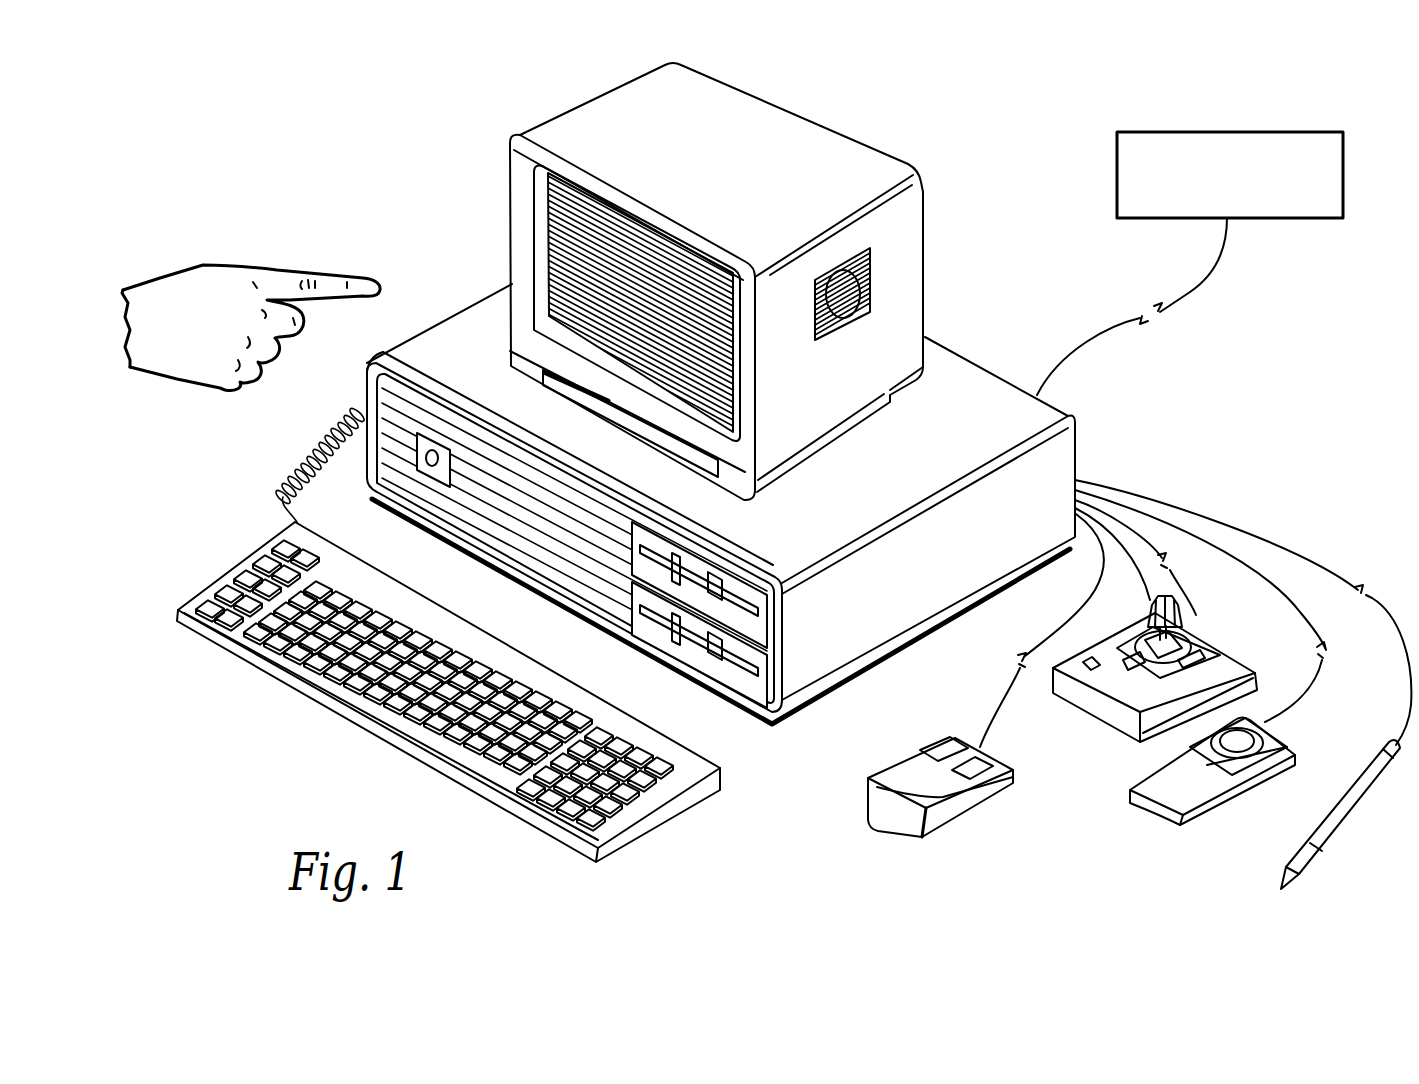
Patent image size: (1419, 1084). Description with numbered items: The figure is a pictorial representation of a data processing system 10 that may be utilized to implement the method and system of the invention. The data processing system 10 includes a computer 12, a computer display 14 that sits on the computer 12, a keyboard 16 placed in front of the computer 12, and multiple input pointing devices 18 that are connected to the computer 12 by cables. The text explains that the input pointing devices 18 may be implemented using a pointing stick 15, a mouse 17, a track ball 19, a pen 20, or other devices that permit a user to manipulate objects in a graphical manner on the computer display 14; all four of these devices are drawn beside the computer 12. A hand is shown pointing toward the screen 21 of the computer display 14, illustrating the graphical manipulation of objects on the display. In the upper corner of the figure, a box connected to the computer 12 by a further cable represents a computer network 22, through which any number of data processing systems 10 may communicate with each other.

The data processing system 10 is at (1282, 132).
The computer 12 is at (922, 610).
The computer display 14 is at (712, 281).
The pointing stick 15 is at (1107, 727).
The keyboard 16 is at (556, 835).
The mouse 17 is at (872, 812).
The input pointing devices 18 is at (1100, 857).
The track ball 19 is at (1205, 807).
The pen 20 is at (1317, 850).
The display screen 21 is at (567, 270).
The computer network 22 is at (1200, 284).